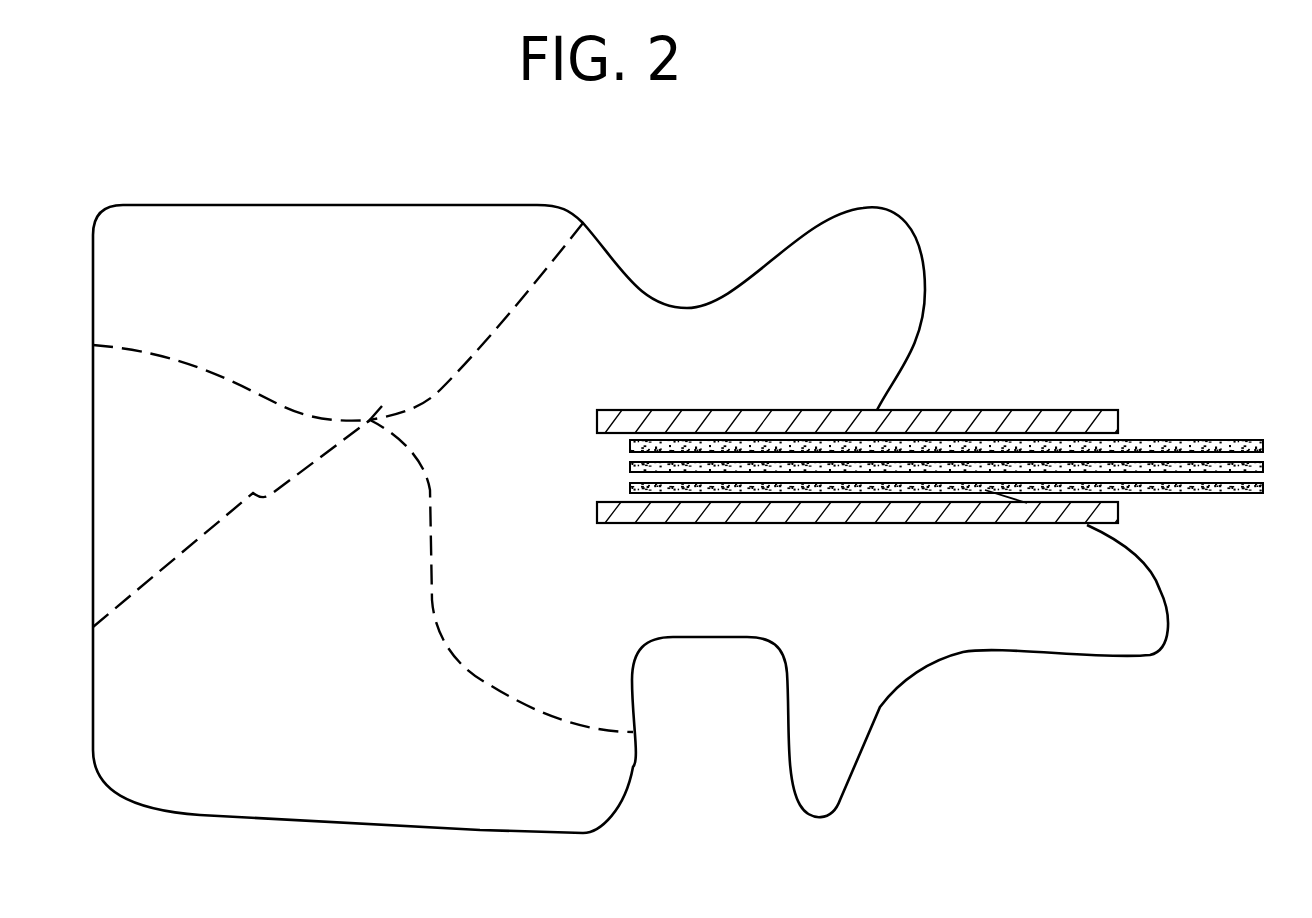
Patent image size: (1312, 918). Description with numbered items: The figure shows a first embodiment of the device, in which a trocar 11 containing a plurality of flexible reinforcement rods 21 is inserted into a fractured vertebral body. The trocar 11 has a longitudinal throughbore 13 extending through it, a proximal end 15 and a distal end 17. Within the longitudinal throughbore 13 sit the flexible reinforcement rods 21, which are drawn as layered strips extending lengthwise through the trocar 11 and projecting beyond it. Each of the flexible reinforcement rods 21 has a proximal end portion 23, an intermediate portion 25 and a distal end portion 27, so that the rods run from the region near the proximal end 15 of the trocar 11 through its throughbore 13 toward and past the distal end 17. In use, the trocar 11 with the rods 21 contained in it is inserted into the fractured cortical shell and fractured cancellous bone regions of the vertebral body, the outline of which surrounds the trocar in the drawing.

The trocar 11 is at (1008, 392).
The longitudinal throughbore 13 is at (948, 438).
The proximal end 15 is at (1082, 413).
The distal end 17 is at (642, 409).
The flexible reinforcement rods 21 is at (736, 483).
The proximal end portion 23 is at (1173, 496).
The intermediate portion 25 is at (965, 487).
The distal end portion 27 is at (676, 494).